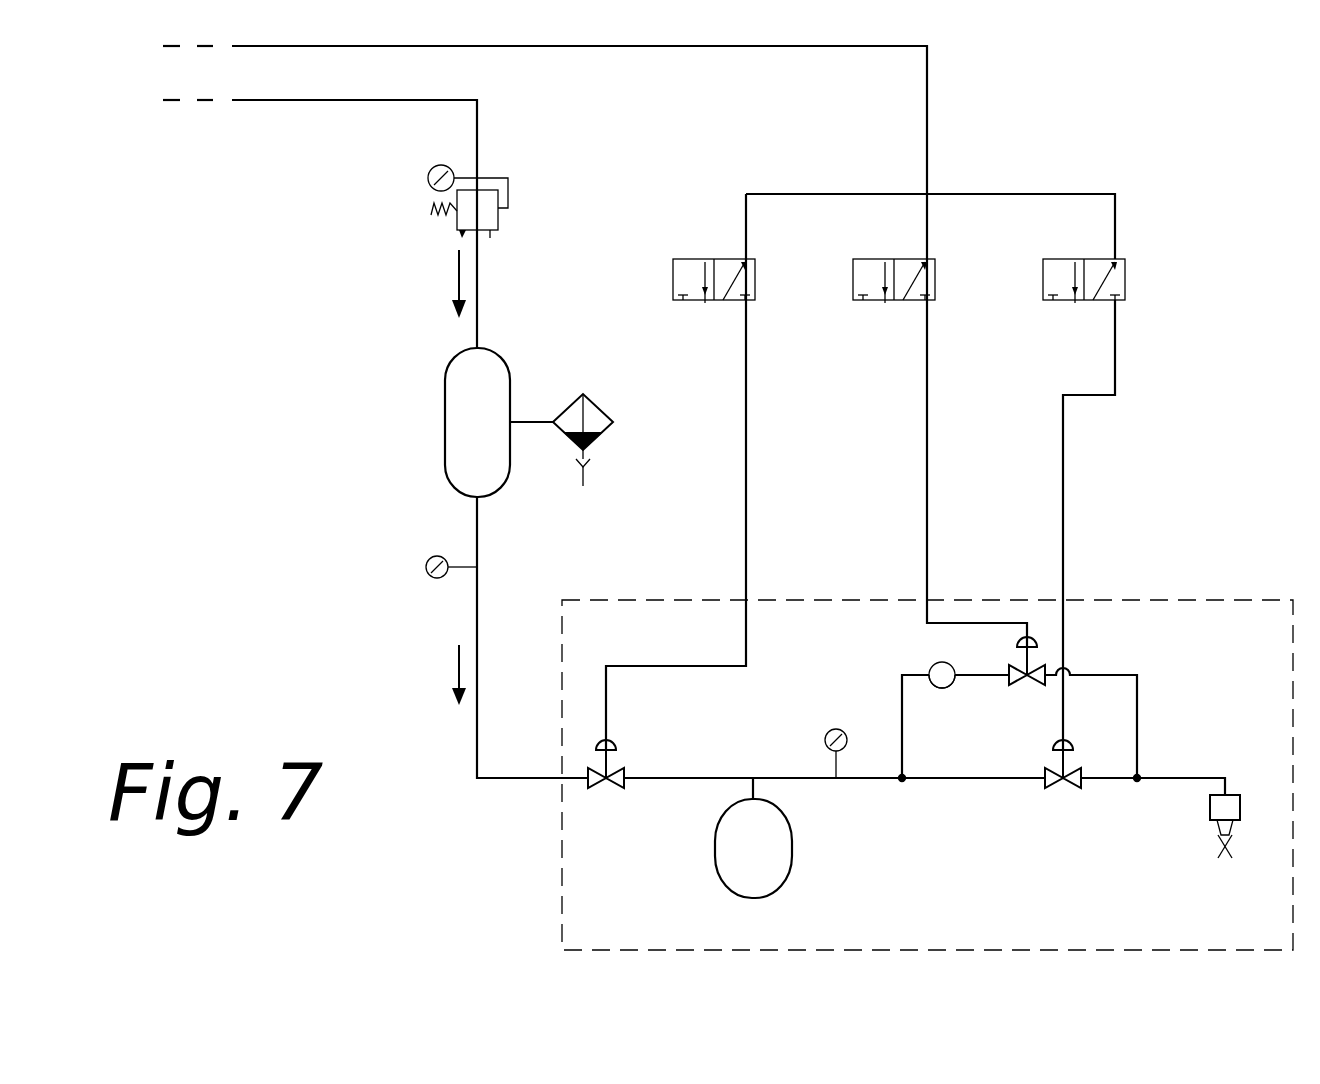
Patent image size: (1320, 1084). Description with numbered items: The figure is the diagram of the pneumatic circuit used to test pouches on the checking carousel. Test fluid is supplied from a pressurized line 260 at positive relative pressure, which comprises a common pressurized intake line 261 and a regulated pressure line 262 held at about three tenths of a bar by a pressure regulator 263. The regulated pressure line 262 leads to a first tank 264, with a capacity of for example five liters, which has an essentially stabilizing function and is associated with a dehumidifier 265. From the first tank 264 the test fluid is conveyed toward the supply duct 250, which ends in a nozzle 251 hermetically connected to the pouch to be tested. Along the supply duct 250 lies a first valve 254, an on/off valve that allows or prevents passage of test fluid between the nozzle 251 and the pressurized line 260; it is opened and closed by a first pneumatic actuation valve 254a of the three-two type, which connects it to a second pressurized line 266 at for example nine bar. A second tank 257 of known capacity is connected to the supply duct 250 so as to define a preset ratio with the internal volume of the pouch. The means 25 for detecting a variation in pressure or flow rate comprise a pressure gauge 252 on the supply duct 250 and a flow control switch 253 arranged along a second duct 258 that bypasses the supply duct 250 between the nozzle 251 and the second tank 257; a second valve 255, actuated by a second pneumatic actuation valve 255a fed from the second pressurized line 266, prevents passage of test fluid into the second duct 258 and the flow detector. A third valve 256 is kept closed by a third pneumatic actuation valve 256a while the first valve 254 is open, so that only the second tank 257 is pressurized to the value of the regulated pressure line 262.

The means for detecting a variation in pressure and/or flow rate 25 is at (1196, 598).
The supply duct 250 is at (1158, 780).
The nozzle 251 is at (1240, 808).
The pressure gauge 252 is at (835, 728).
The flow control switch 253 is at (942, 688).
The first valve 254 is at (596, 786).
The first pneumatic actuation valve 254a is at (690, 260).
The second valve 255 is at (1037, 662).
The second pneumatic actuation valve 255a is at (877, 300).
The third valve 256 is at (1052, 786).
The third pneumatic actuation valve 256a is at (1128, 275).
The second tank 257 is at (775, 875).
The second duct 258 is at (1137, 707).
The pressurized line 260 is at (398, 493).
The common pressurized intake line 261 is at (288, 100).
The regulated pressure line 262 is at (477, 614).
The pressure regulator 263 is at (500, 208).
The first tank 264 is at (462, 386).
The dehumidifier 265 is at (595, 417).
The second pressurized line 266 is at (818, 46).